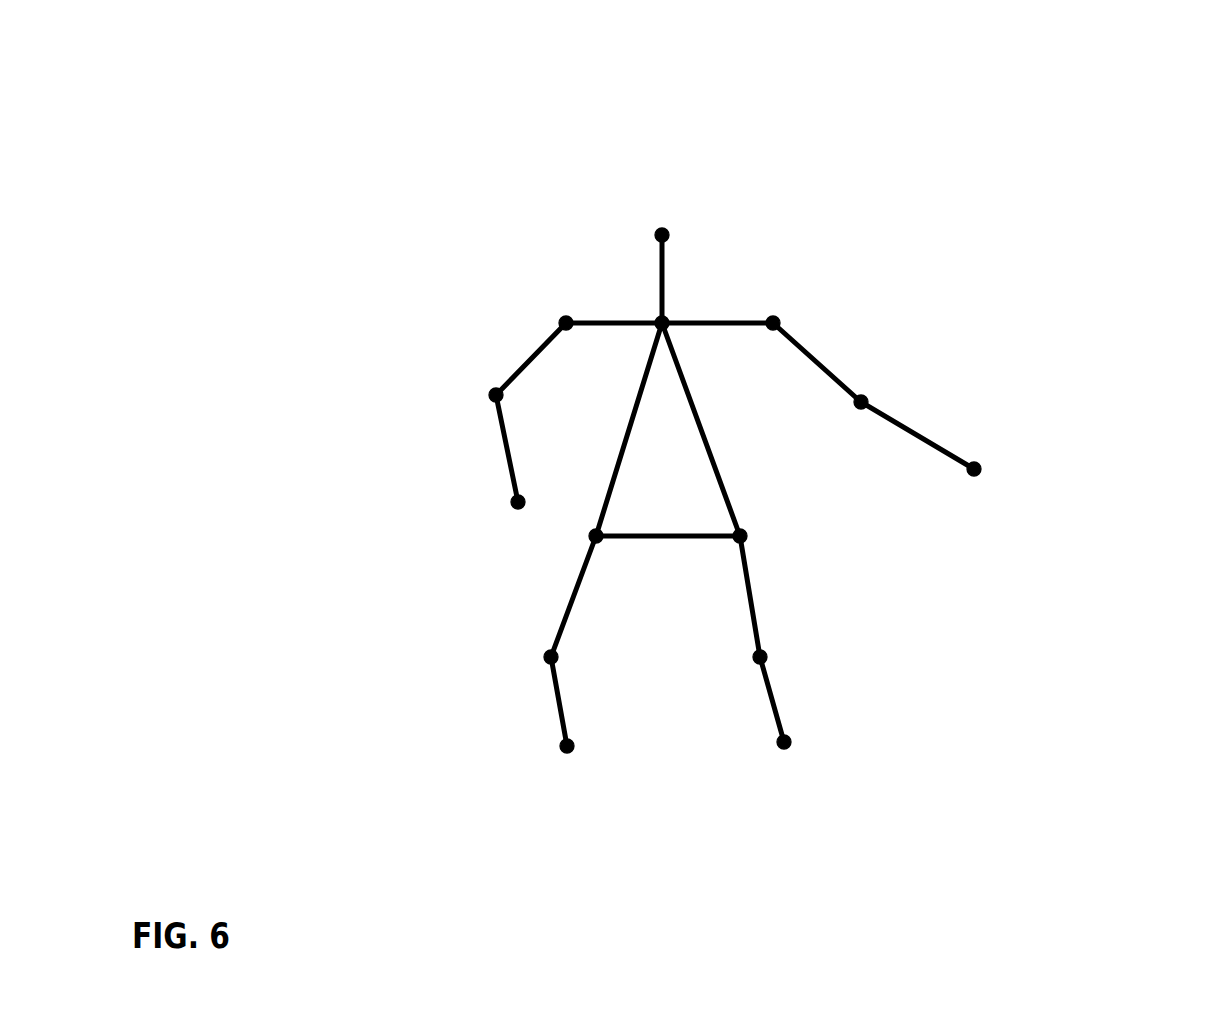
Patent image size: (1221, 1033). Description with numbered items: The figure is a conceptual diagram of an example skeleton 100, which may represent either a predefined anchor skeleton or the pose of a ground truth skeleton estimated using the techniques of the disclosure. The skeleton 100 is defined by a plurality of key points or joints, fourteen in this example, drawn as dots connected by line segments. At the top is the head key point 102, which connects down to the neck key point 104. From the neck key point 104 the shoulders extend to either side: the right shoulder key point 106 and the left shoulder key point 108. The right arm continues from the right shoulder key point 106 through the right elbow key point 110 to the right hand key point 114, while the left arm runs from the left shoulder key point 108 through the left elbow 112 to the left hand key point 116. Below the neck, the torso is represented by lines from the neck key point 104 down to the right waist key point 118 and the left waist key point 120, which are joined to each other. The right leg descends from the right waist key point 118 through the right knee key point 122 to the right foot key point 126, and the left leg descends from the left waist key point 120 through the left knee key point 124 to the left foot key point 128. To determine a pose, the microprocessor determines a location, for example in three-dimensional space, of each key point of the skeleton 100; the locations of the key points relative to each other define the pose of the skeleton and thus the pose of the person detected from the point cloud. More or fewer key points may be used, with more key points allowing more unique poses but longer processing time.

The skeleton 100 is at (1085, 82).
The head key point 102 is at (660, 227).
The neck key point 104 is at (667, 317).
The right shoulder key point 106 is at (563, 317).
The left shoulder key point 108 is at (777, 318).
The right elbow key point 110 is at (494, 390).
The left elbow 112 is at (864, 397).
The right hand key point 114 is at (515, 498).
The left hand key point 116 is at (977, 464).
The right waist key point 118 is at (593, 531).
The left waist key point 120 is at (744, 530).
The right knee key point 122 is at (549, 652).
The left knee key point 124 is at (764, 652).
The right foot key point 126 is at (565, 741).
The left foot key point 128 is at (787, 737).